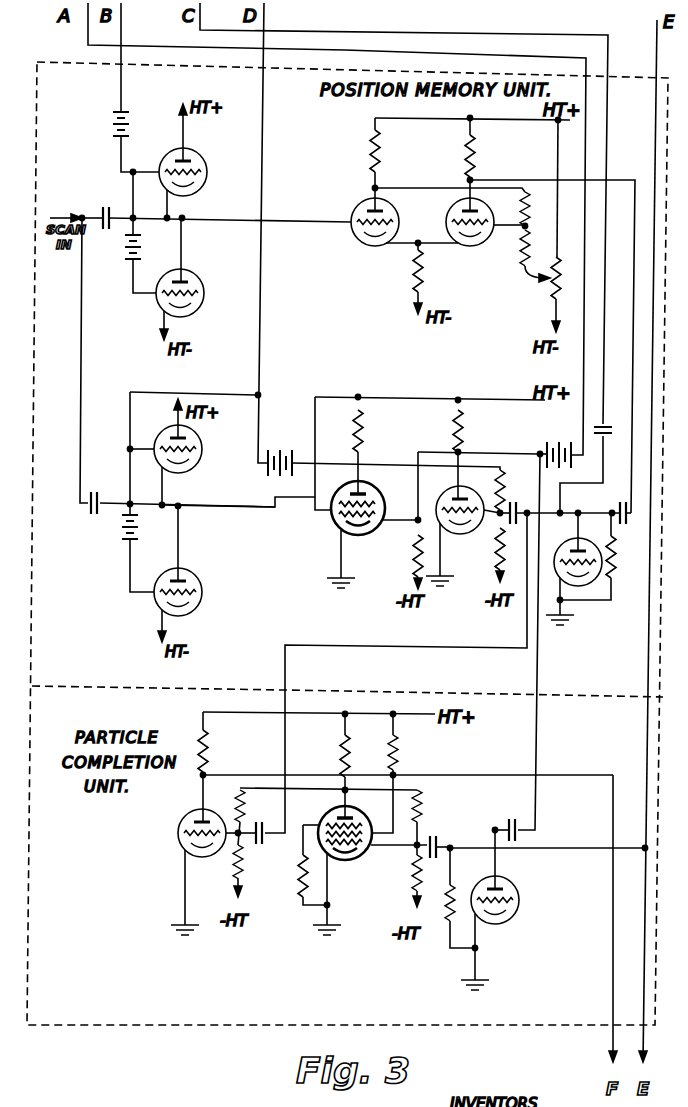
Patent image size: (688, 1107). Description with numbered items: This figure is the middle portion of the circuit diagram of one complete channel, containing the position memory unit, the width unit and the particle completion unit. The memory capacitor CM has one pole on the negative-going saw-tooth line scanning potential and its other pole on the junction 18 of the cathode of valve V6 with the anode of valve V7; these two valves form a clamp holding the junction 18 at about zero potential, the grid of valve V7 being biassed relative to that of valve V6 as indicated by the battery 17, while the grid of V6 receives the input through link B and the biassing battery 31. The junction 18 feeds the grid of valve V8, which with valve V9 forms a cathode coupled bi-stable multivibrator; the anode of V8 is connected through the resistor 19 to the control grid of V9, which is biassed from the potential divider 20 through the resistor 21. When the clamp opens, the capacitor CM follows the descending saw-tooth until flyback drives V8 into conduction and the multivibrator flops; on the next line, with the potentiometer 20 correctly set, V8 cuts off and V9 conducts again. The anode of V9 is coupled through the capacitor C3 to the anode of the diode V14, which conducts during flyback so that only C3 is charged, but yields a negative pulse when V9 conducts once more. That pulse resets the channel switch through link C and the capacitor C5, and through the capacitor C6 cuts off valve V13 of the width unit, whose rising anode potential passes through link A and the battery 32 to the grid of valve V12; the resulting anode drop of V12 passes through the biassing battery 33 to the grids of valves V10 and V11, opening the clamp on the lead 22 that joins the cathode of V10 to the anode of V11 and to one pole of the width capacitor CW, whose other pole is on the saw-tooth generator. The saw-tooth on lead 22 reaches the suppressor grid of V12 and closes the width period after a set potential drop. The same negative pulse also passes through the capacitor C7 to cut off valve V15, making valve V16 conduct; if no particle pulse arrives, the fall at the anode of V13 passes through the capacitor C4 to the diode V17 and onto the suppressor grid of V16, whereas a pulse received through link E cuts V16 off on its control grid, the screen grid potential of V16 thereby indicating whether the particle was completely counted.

The battery 17 is at (141, 247).
The junction 18 is at (184, 219).
The resistor 19 is at (528, 212).
The potential divider 20 is at (541, 226).
The resistor 21 is at (521, 256).
The lead 22 is at (165, 506).
The biassing battery 31 is at (130, 126).
The battery 32 is at (555, 446).
The biassing battery 33 is at (283, 453).
The valve V6 is at (201, 165).
The valve V7 is at (204, 293).
The valve V8 is at (399, 218).
The valve V9 is at (491, 216).
The valve V10 is at (202, 448).
The valve V11 is at (202, 586).
The valve V12 is at (374, 508).
The valve V13 is at (445, 504).
The diode V14 is at (598, 578).
The valve V15 is at (184, 814).
The valve V16 is at (352, 815).
The diode V17 is at (520, 892).
The capacitor C3 is at (631, 529).
The capacitor C4 is at (510, 821).
The capacitor C5 is at (610, 420).
The capacitor C6 is at (521, 505).
The capacitor C7 is at (263, 849).
The memory capacitor CM is at (97, 229).
The width capacitor CW is at (88, 517).